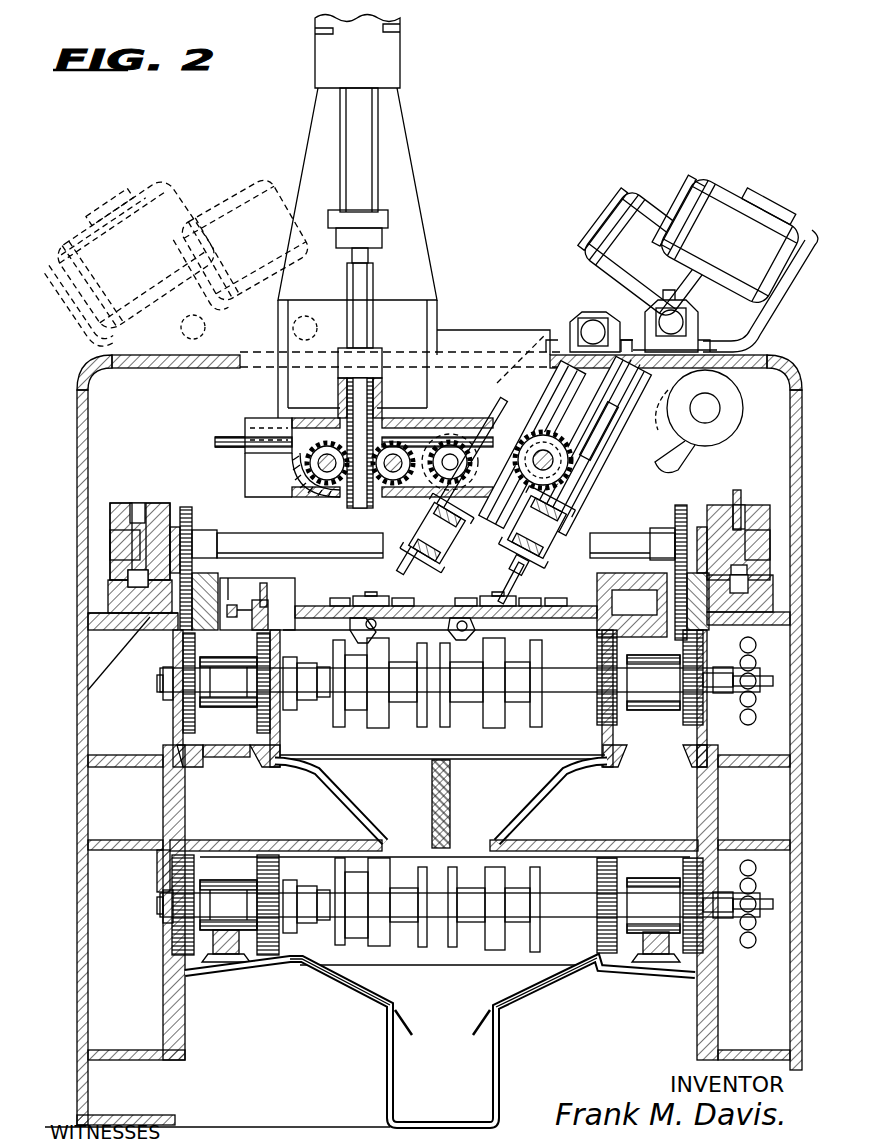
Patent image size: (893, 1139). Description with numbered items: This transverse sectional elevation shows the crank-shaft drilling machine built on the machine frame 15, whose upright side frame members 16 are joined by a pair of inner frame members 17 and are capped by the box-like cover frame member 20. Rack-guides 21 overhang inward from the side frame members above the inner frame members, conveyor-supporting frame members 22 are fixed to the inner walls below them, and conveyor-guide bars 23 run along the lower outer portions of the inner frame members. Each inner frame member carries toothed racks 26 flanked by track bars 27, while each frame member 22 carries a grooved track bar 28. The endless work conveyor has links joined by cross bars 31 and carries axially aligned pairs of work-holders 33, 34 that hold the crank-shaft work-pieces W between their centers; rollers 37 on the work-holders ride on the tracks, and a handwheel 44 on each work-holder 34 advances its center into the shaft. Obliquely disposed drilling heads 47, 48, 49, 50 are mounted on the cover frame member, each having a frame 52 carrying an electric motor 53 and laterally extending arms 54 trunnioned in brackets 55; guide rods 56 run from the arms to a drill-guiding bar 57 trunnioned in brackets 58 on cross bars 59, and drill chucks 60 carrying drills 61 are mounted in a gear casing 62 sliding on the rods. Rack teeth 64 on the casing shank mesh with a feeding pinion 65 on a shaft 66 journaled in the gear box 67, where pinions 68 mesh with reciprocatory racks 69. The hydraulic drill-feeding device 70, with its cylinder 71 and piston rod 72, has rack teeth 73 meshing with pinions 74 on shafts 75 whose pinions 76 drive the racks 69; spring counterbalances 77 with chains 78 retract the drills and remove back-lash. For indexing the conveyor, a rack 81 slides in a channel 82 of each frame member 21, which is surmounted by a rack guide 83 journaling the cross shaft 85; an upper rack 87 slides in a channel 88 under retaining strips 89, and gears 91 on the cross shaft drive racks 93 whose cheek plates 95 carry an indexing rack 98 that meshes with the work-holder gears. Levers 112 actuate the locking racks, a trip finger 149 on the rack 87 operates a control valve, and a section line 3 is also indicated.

The section line 3 is at (445, 107).
The machine frame 15 is at (62, 712).
The side frame members 16 is at (80, 880).
The inner frame members 17 is at (325, 790).
The cover frame member 20 is at (77, 425).
The rack-guides 21 is at (110, 592).
The conveyor-supporting frame members 22 is at (225, 978).
The conveyor-guide bars 23 is at (157, 865).
The toothed racks 26 is at (678, 758).
The track bar 27 is at (602, 745).
The grooved track bar 28 is at (645, 950).
The cross bars 31 is at (316, 858).
The work-holder 33 is at (180, 715).
The work-holder 34 is at (712, 722).
The rollers 37 is at (158, 700).
The handwheel 44 is at (757, 712).
The drilling head 47 is at (142, 148).
The drilling head 48 is at (264, 148).
The drilling head 49 is at (644, 148).
The drilling head 50 is at (765, 148).
The drilling head frame 52 is at (765, 330).
The electric motor 53 is at (770, 218).
The arms 54 is at (583, 328).
The brackets 55 is at (582, 312).
The guide rods 56 is at (412, 558).
The drill-guiding bar 57 is at (350, 625).
The brackets 58 is at (360, 596).
The cross bars 59 is at (316, 606).
The drill chucks 60 is at (526, 566).
The drills 61 is at (508, 570).
The gear casing 62 is at (550, 560).
The rack teeth 64 is at (567, 467).
The feeding pinion 65 is at (453, 533).
The horizontal shaft 66 is at (552, 440).
The gear box 67 is at (262, 418).
The pinions 68 is at (470, 430).
The reciprocatory racks 69 is at (235, 430).
The drill-feeding device 70 is at (400, 54).
The hydraulic cylinder 71 is at (372, 166).
The piston rod 72 is at (370, 280).
The rack teeth 73 is at (343, 392).
The pinions 74 is at (340, 497).
The shafts 75 is at (305, 463).
The pinions 76 is at (318, 483).
The spring counterbalances 77 is at (744, 406).
The chains 78 is at (600, 500).
The rack 81 is at (119, 653).
The channel 82 is at (100, 613).
The rack guides 83 is at (110, 545).
The cross shaft 85 is at (240, 533).
The upper horizontal rack 87 is at (128, 505).
The channel 88 is at (125, 528).
The strips 89 is at (158, 505).
The gears 91 is at (188, 507).
The racks 93 is at (245, 583).
The cheek plates 95 is at (158, 617).
The indexing rack 98 is at (175, 640).
The levers 112 is at (263, 583).
The trip finger 149 is at (730, 500).
The work-pieces W is at (375, 727).